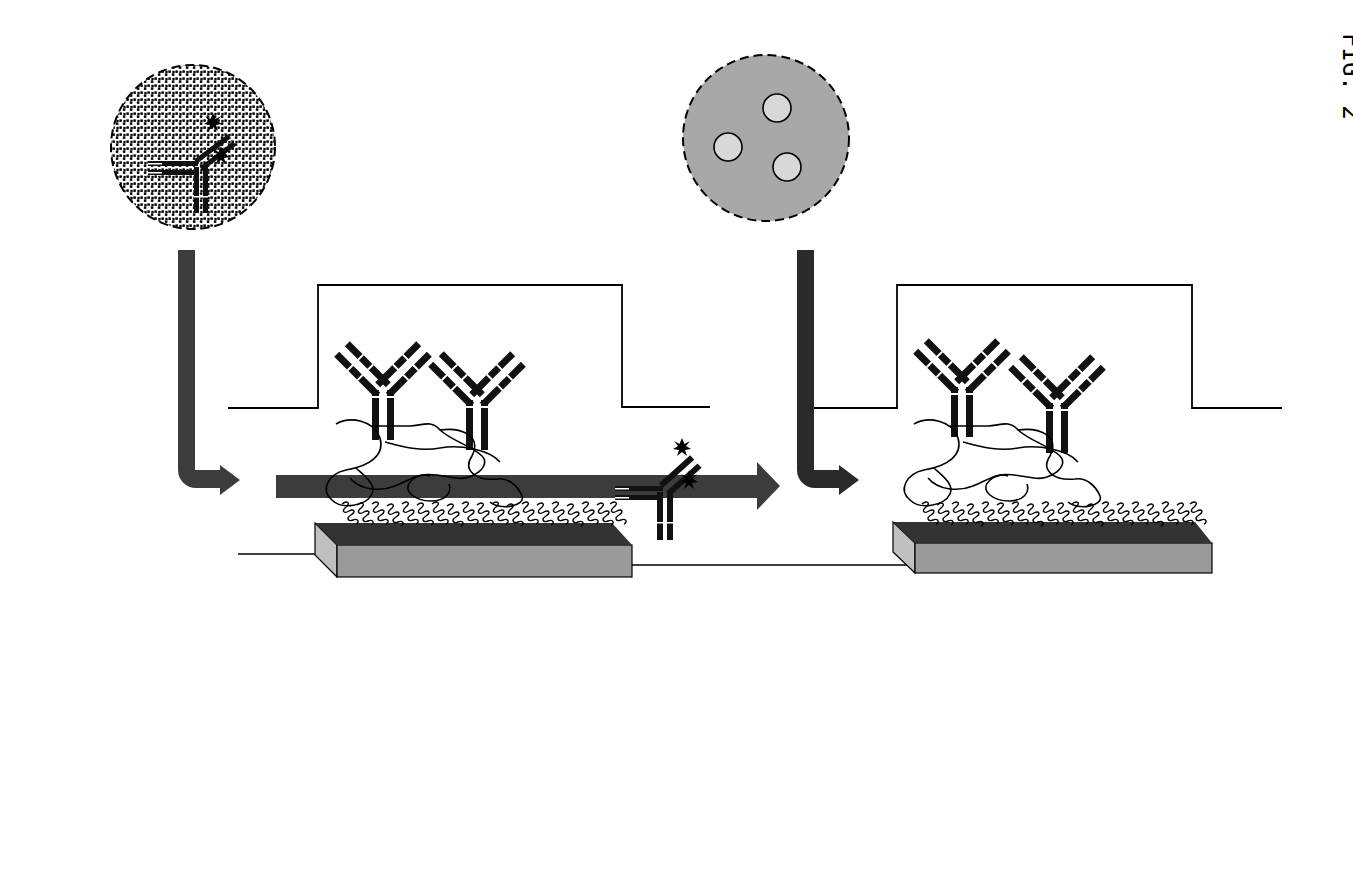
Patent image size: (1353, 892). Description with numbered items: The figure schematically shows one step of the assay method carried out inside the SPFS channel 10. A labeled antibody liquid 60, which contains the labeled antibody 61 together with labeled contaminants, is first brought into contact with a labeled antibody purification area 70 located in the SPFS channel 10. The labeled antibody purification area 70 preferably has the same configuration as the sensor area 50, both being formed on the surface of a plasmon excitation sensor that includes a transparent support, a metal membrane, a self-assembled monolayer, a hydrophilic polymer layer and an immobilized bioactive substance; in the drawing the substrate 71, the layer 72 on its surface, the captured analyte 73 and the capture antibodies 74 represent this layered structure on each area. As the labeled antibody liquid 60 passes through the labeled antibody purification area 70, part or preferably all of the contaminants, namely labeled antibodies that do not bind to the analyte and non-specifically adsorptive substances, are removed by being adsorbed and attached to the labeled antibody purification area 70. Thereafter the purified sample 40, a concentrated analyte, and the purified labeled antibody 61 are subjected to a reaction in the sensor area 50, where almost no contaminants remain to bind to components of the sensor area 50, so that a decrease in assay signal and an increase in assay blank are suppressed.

The SPFS channel 10 is at (1153, 338).
The purified sample 40 is at (825, 129).
The sensor area 50 is at (1035, 607).
The labeled antibody liquid 60 is at (210, 92).
The labeled antibody 61 is at (212, 178).
The labeled antibody purification area 70 is at (428, 509).
The substrate 71 is at (337, 564).
The linker layer on substrate surface 72 is at (337, 525).
The target analyte 73 is at (518, 442).
The capture antibody 74 is at (469, 372).